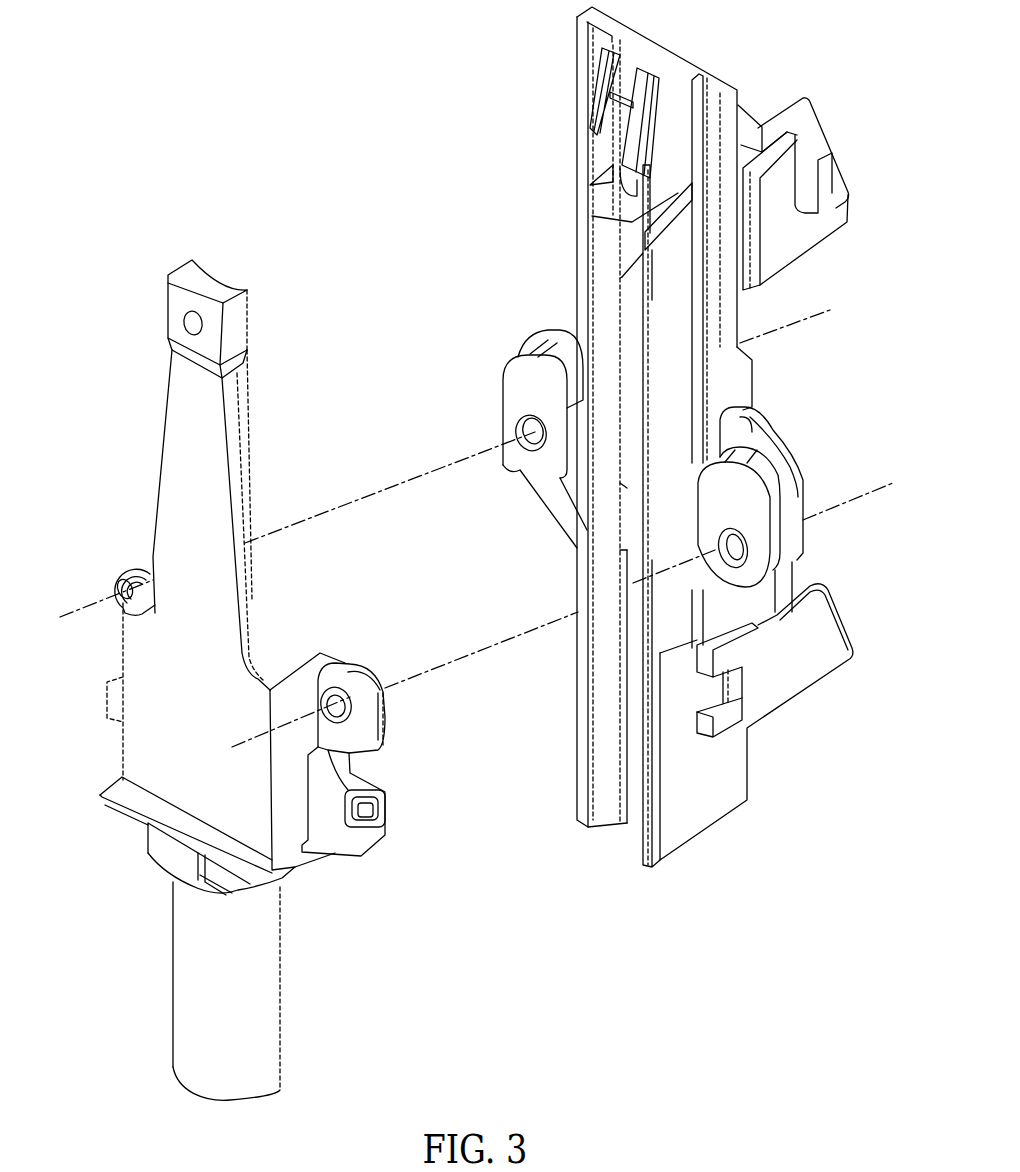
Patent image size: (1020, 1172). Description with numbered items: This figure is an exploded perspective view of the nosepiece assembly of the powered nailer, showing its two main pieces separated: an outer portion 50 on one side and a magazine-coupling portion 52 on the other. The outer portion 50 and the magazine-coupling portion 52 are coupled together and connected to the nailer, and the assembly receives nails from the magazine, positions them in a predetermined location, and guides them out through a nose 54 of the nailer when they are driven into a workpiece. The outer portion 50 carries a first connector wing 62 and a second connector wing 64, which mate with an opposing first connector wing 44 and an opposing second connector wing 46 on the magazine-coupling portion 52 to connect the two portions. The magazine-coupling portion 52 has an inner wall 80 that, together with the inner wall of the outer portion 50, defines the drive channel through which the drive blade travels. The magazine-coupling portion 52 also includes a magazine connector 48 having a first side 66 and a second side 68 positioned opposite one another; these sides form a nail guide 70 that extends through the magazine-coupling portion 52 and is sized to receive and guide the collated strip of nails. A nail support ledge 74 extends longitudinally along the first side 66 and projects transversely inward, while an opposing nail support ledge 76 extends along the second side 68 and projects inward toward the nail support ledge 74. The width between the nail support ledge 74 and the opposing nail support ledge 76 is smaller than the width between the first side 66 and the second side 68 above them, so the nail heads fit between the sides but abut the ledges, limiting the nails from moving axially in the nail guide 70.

The opposing first connector wing 44 is at (547, 340).
The opposing second connector wing 46 is at (787, 468).
The magazine connector 48 is at (760, 95).
The outer portion 50 is at (175, 440).
The magazine-coupling portion 52 is at (733, 327).
The nose 54 is at (198, 1015).
The first connector wing 62 is at (130, 552).
The second connector wing 64 is at (377, 693).
The first side 66 is at (633, 337).
The second side 68 is at (672, 347).
The nail guide 70 is at (620, 290).
The nail support ledge 74 is at (595, 212).
The opposing nail support ledge 76 is at (675, 221).
The inner wall 80 is at (602, 805).